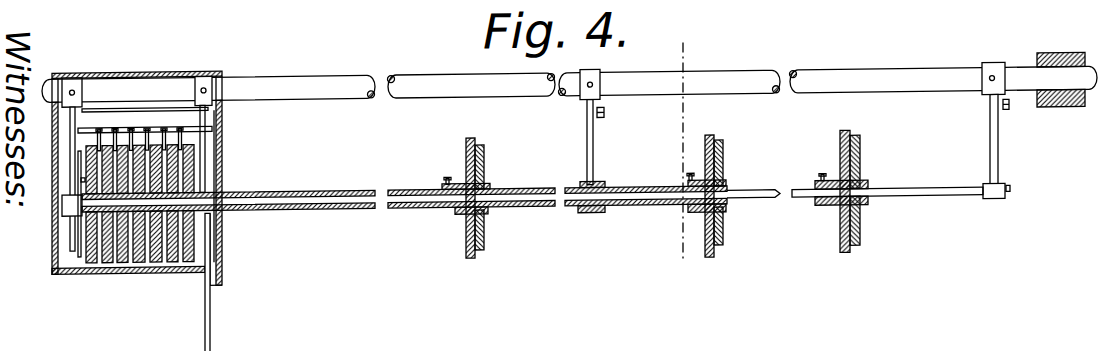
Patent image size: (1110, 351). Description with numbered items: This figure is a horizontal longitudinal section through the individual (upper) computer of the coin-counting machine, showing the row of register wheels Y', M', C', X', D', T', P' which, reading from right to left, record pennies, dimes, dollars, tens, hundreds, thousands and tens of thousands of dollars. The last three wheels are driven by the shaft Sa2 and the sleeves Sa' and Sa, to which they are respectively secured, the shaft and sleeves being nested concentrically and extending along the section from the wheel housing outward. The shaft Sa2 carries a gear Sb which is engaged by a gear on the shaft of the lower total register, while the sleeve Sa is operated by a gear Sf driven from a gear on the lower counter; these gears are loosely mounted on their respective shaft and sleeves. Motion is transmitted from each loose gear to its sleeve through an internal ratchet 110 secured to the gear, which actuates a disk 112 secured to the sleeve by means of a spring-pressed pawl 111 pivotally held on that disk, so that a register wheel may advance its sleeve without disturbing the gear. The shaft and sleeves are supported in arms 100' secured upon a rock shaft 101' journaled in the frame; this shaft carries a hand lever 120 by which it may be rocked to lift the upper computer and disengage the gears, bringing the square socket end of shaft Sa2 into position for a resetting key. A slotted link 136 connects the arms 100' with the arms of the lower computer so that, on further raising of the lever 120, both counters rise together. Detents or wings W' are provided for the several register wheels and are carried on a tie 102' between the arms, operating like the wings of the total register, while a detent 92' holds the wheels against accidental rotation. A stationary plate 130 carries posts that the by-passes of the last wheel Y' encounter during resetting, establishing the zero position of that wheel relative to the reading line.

The arms 100' is at (552, 169).
The rock shaft 101' is at (569, 67).
The cover plate 102' is at (181, 123).
The contact bar 92' is at (145, 115).
The detents or wings W' is at (139, 114).
The stationary plate 130 is at (78, 258).
The hand lever 120 is at (212, 328).
The slotted link 136 is at (606, 124).
The internal ratchet 110 is at (482, 258).
The spring-pressed pawl 111 is at (468, 241).
The disk 112 is at (482, 224).
The sleeve Sa' is at (318, 173).
The sleeve Sa is at (597, 224).
The shaft Sa2 is at (931, 207).
The gear Sf is at (701, 288).
The gear Sb is at (843, 263).
The register wheel Y' is at (77, 230).
The register wheel M' is at (104, 230).
The register wheel C' is at (127, 229).
The register wheel X' is at (144, 229).
The register wheel D' is at (160, 229).
The register wheel T' is at (175, 229).
The register wheel P' is at (191, 228).